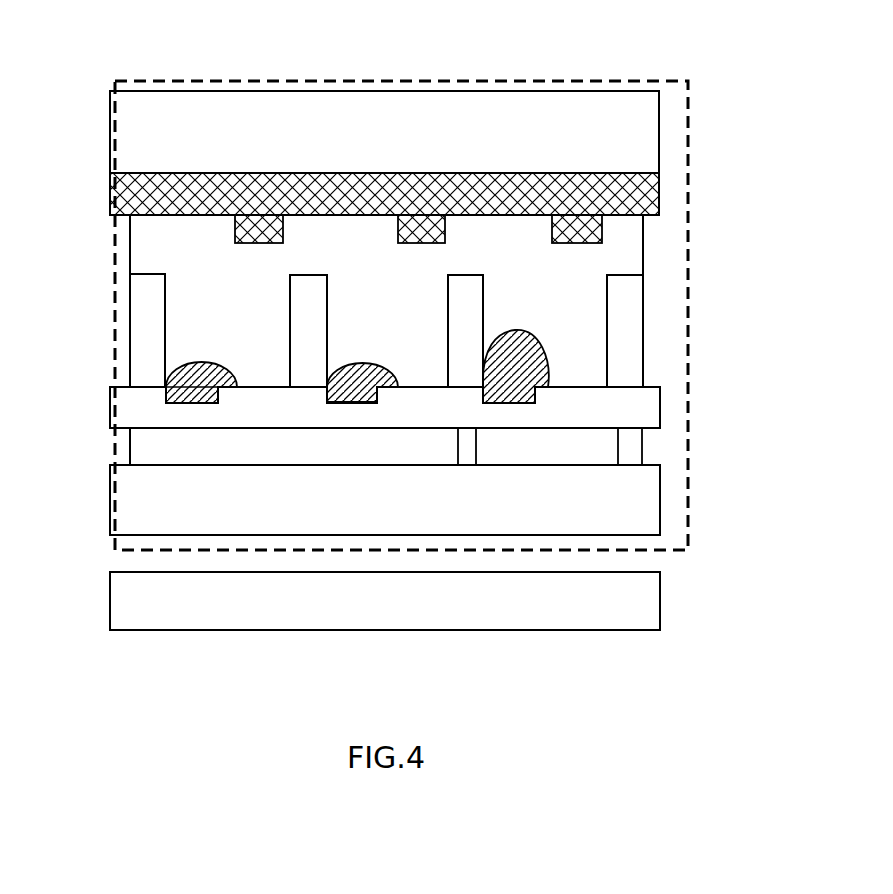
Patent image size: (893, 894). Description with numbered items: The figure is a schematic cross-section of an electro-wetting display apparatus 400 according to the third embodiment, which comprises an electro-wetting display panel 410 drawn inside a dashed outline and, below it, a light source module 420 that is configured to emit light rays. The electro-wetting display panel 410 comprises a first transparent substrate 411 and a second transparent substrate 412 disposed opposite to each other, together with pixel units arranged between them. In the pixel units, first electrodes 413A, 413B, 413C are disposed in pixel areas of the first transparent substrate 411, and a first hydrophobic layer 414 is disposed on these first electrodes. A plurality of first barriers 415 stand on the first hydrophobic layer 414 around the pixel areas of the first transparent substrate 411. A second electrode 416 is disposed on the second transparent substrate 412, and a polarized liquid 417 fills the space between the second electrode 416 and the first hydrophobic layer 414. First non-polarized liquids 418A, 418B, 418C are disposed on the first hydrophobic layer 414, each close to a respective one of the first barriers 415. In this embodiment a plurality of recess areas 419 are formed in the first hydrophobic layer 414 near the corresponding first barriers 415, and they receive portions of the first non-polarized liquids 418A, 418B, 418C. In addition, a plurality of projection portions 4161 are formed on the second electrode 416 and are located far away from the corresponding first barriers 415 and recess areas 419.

The electro-wetting display apparatus 400 is at (357, 284).
The electro-wetting display panel 410 is at (118, 312).
The first transparent substrate 411 is at (652, 497).
The second transparent substrate 412 is at (647, 127).
The first electrode 413A is at (157, 450).
The first electrode 413B is at (452, 440).
The first electrode 413C is at (540, 450).
The first hydrophobic layer 414 is at (148, 407).
The first barrier 415 is at (155, 283).
The second electrode 416 is at (647, 185).
The projection portion 4161 is at (290, 235).
The polarized liquid 417 is at (640, 245).
The first non-polarized liquid 418A is at (227, 375).
The first non-polarized liquid 418B is at (380, 367).
The first non-polarized liquid 418C is at (547, 370).
The recess area 419 is at (165, 385).
The light source module 420 is at (137, 610).